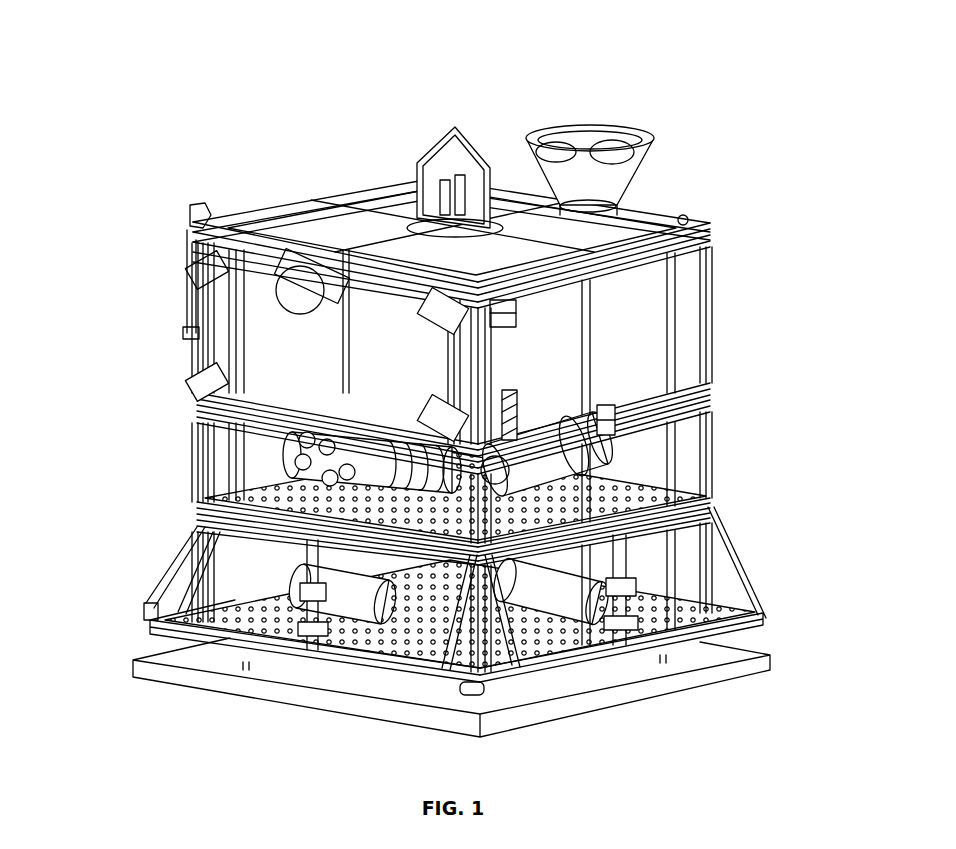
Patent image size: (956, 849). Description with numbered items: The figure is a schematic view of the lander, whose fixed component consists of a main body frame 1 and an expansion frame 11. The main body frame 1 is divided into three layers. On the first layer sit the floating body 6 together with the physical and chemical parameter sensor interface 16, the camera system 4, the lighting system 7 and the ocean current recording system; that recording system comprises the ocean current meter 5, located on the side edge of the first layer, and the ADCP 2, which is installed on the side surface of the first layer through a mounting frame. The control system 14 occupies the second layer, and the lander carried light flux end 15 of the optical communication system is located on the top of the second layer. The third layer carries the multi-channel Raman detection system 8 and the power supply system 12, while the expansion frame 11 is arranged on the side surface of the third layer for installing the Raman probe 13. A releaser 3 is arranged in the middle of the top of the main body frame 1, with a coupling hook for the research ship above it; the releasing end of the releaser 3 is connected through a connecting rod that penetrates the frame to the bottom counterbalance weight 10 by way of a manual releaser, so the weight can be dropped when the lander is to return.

The main body frame 1 is at (683, 220).
The ADCP 2 is at (563, 135).
The releaser 3 is at (435, 158).
The camera system 4 is at (292, 230).
The ocean current meter 5 is at (195, 237).
The floating body 6 is at (277, 333).
The lighting system 7 is at (193, 377).
The multi-channel Raman detection system 8 is at (207, 517).
The bottom counterbalance weight 10 is at (378, 710).
The expansion frame 11 is at (497, 670).
The power supply system 12 is at (530, 583).
The Raman probe 13 is at (700, 642).
The control system 14 is at (713, 512).
The lander carried light flux end 15 is at (605, 425).
The physical and chemical parameter sensor interface 16 is at (510, 388).